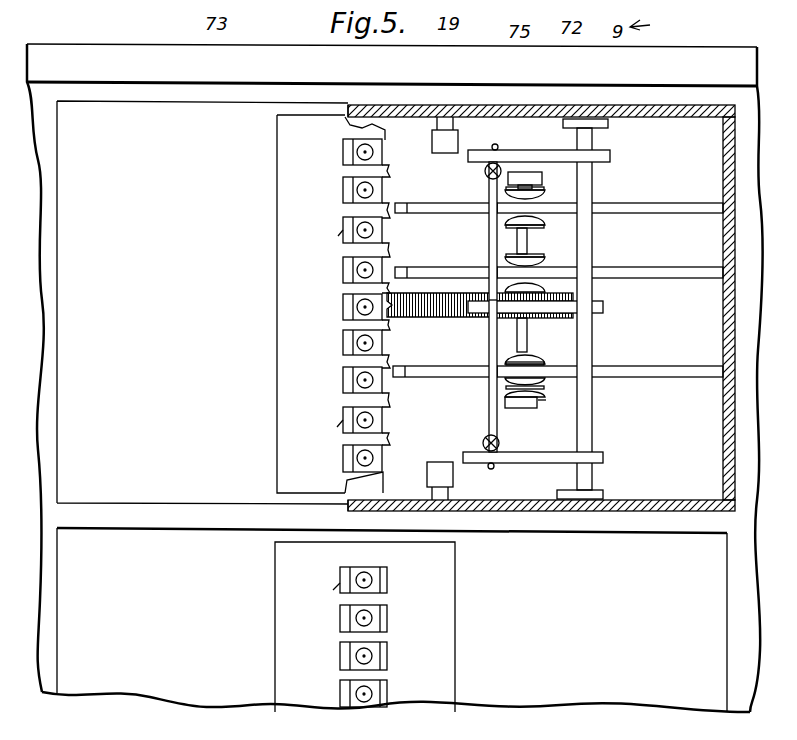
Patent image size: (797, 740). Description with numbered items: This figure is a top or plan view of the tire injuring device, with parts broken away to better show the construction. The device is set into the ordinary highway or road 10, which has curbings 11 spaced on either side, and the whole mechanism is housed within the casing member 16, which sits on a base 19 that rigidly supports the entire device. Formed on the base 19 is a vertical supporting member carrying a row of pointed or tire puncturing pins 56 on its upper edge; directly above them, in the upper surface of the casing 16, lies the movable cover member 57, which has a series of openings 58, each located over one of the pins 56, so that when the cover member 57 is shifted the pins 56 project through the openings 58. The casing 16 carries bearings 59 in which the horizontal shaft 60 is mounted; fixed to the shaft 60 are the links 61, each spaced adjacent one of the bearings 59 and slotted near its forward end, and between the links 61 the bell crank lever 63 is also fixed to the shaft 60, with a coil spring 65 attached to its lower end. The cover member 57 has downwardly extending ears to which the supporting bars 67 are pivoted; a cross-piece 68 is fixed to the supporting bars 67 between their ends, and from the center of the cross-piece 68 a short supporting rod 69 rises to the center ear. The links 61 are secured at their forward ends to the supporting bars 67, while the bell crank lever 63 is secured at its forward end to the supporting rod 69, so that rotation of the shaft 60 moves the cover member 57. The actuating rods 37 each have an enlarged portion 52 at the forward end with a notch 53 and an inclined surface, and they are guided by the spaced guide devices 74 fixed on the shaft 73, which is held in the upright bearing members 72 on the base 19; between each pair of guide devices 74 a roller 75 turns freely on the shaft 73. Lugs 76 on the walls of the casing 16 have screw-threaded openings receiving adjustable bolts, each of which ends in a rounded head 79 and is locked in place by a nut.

The highway or road 10 is at (386, 396).
The curbings 11 is at (392, 65).
The casing member 16 is at (723, 178).
The base 19 is at (395, 378).
The actuating rods 37 is at (658, 214).
The enlarged portion 52 is at (443, 211).
The notch 53 is at (412, 206).
The pointed or tire puncturing pins 56 is at (360, 153).
The movable cover member 57 is at (365, 413).
The openings 58 is at (348, 233).
The bearings 59 is at (600, 121).
The horizontal shaft 60 is at (598, 146).
The links 61 is at (522, 156).
The bell crank lever 63 is at (606, 312).
The coil spring 65 is at (478, 318).
The supporting bars 67 is at (489, 176).
The cross-piece 68 is at (490, 230).
The short supporting rod 69 is at (488, 332).
The upright bearing members 72 is at (535, 178).
The shaft 73 is at (527, 240).
The spaced guide devices 74 is at (543, 228).
The roller 75 is at (540, 380).
The lugs 76 is at (447, 122).
The rounded head 79 is at (442, 308).